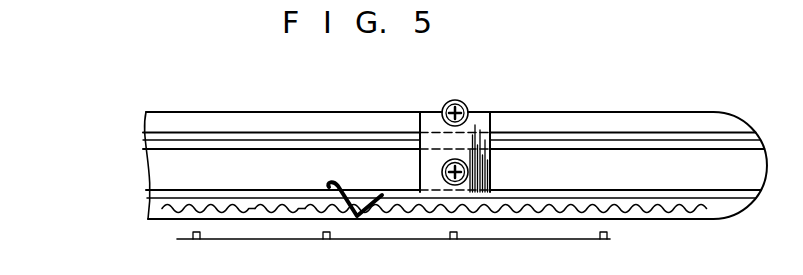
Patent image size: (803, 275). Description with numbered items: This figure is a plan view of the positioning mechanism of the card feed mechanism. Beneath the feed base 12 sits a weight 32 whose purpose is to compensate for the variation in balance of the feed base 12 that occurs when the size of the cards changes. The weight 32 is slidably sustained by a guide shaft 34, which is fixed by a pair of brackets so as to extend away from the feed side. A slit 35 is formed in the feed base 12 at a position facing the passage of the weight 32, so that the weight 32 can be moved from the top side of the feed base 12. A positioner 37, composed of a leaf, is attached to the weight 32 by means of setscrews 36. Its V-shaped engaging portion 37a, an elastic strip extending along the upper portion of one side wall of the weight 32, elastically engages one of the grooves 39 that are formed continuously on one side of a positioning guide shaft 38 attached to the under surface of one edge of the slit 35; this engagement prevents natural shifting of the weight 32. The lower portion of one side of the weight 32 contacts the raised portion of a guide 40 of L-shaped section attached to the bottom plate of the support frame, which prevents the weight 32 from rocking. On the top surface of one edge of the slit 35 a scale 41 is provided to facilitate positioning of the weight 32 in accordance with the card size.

The feed base 12 is at (656, 112).
The weight 32 is at (493, 172).
The guide shaft 34 is at (598, 132).
The slit 35 is at (517, 112).
The setscrews 36 is at (457, 159).
The positioner 37 is at (430, 122).
The V-shaped engaging portion 37a is at (367, 193).
The positioning guide shaft 38 is at (647, 211).
The grooves 39 is at (298, 209).
The guide 40 is at (604, 190).
The scale 41 is at (450, 238).